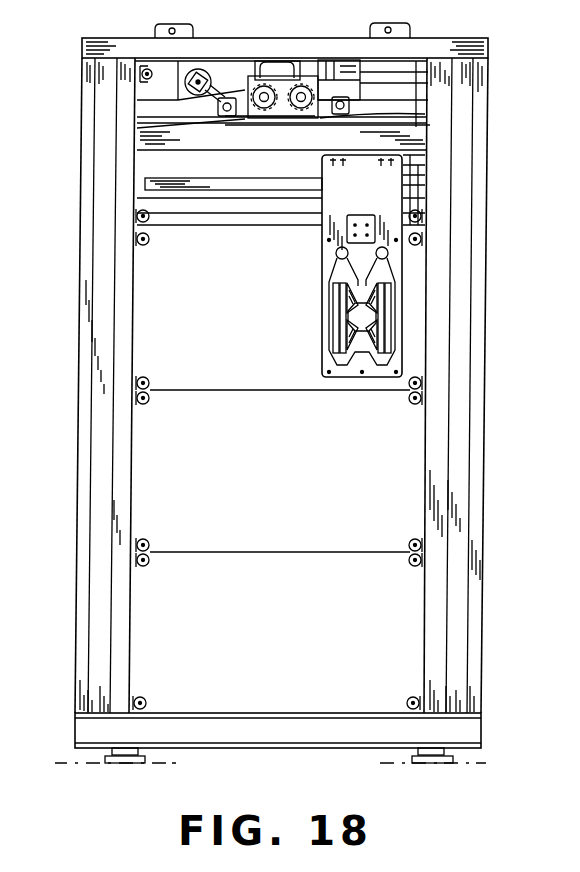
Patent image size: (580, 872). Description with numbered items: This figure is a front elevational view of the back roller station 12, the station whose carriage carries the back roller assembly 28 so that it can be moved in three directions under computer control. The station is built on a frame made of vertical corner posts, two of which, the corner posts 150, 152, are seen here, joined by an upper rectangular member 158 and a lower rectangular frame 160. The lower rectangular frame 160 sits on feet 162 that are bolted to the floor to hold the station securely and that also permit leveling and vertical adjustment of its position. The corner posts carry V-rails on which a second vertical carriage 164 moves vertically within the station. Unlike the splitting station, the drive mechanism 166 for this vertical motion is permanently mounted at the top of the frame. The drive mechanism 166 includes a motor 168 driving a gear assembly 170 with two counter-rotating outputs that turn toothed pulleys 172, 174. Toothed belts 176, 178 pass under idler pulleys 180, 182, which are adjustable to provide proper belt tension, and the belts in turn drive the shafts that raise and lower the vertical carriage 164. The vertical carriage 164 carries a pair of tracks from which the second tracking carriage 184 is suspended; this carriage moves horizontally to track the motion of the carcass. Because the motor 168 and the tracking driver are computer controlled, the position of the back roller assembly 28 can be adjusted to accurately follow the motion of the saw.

The back roller station 12 is at (503, 178).
The back roller assembly 28 is at (310, 285).
The vertical corner post 150 is at (77, 475).
The vertical corner post 152 is at (476, 467).
The upper rectangular member 158 is at (362, 47).
The lower rectangular frame 160 is at (298, 733).
The feet 162 is at (102, 765).
The second vertical carriage 164 is at (157, 167).
The drive mechanism 166 is at (160, 106).
The motor 168 is at (388, 64).
The gear assembly 170 is at (301, 75).
The toothed pulley 172 is at (263, 131).
The toothed pulley 174 is at (305, 117).
The toothed belt 176 is at (170, 100).
The toothed belt 178 is at (405, 113).
The idler pulley 180 is at (205, 77).
The idler pulley 182 is at (377, 93).
The second tracking carriage 184 is at (328, 241).